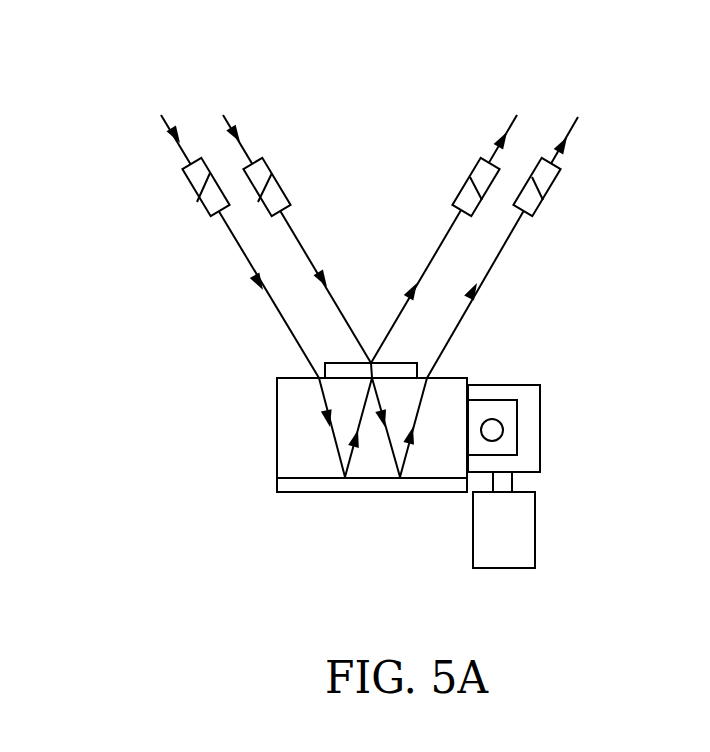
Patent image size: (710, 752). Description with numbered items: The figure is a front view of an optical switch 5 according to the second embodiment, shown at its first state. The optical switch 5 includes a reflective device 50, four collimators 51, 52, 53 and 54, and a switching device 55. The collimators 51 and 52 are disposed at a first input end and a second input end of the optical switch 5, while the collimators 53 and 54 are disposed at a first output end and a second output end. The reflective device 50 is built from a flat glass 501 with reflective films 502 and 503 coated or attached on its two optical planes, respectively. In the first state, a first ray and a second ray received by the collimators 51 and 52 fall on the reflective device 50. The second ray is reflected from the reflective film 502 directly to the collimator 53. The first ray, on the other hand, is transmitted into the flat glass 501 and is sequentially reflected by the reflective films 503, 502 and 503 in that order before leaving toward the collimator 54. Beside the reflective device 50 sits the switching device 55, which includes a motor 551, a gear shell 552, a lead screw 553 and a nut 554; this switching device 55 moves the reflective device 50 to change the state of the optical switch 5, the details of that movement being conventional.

The optical switch 5 is at (390, 324).
The reflective device 50 is at (295, 429).
The flat glass 501 is at (283, 428).
The reflective film 502 is at (322, 367).
The reflective film 503 is at (327, 482).
The collimator 51 is at (192, 178).
The collimator 52 is at (267, 160).
The collimator 53 is at (477, 158).
The collimator 54 is at (552, 178).
The switching device 55 is at (570, 473).
The motor 551 is at (544, 517).
The gear shell 552 is at (530, 398).
The lead screw 553 is at (503, 428).
The nut 554 is at (512, 438).